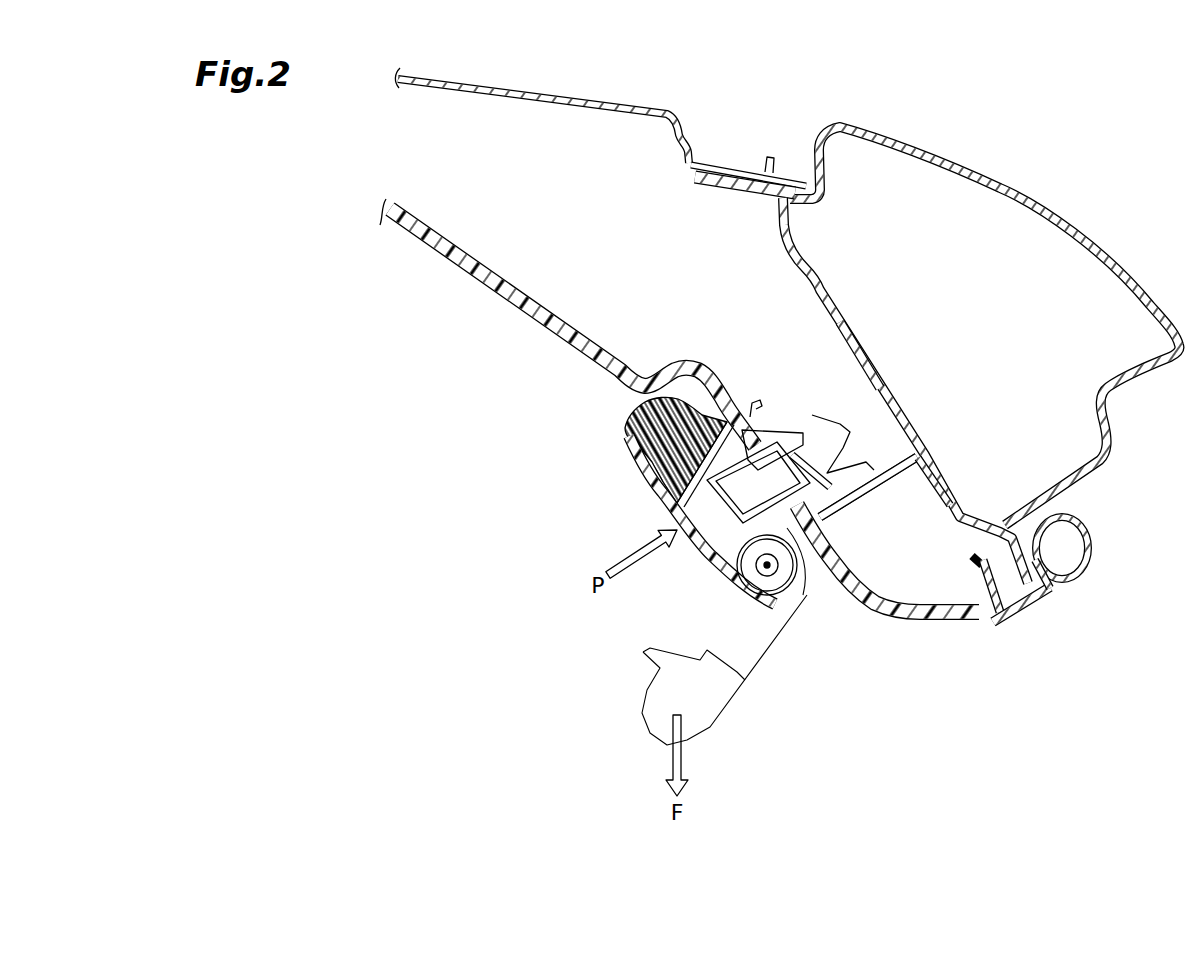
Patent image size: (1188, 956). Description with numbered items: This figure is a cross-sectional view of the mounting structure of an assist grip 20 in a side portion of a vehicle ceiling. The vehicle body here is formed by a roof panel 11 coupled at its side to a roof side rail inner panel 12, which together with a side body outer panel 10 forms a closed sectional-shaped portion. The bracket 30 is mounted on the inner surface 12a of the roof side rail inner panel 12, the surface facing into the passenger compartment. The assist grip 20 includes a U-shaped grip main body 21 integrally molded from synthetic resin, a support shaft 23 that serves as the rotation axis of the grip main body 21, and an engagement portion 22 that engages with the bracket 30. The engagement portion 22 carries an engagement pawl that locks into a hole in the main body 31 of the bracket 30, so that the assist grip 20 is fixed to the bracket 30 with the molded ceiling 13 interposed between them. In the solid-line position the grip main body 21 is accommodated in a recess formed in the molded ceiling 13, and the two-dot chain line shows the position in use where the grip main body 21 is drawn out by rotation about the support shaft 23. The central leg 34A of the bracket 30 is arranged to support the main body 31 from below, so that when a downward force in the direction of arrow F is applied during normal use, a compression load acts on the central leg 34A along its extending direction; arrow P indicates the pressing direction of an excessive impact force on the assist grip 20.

The side body outer panel 10 is at (1052, 200).
The roof panel 11 is at (611, 104).
The roof side rail inner panel 12 is at (835, 310).
The inner surface 12a is at (865, 373).
The molded ceiling 13 is at (543, 302).
The assist grip 20 is at (623, 433).
The grip main body 21 is at (657, 500).
The engagement portion 22 is at (795, 442).
The support shaft 23 is at (796, 596).
The bracket 30 is at (857, 505).
The main body 31 is at (848, 474).
The central leg 34A is at (884, 482).